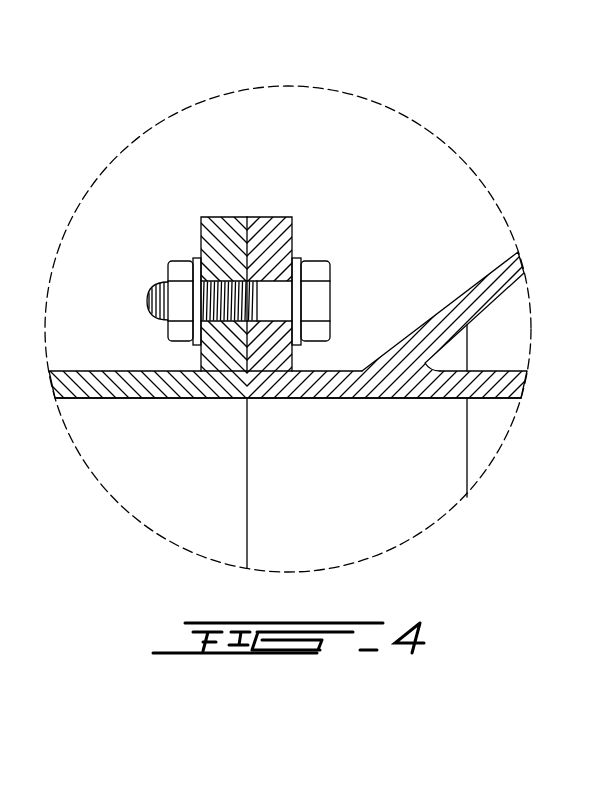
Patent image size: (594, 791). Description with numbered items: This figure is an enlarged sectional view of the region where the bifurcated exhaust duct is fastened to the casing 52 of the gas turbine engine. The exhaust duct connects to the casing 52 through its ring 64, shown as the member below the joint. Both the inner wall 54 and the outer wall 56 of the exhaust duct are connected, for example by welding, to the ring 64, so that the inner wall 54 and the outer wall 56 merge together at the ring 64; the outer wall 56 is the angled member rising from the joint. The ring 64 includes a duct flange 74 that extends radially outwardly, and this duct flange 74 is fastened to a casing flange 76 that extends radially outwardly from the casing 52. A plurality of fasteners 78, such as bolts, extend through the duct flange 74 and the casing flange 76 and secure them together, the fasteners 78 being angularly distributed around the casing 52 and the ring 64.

The casing 52 is at (82, 372).
The inner wall 54 is at (504, 398).
The outer wall 56 is at (500, 268).
The ring 64 is at (387, 487).
The duct flange 74 is at (268, 235).
The casing flange 76 is at (220, 232).
The fasteners 78 is at (317, 270).